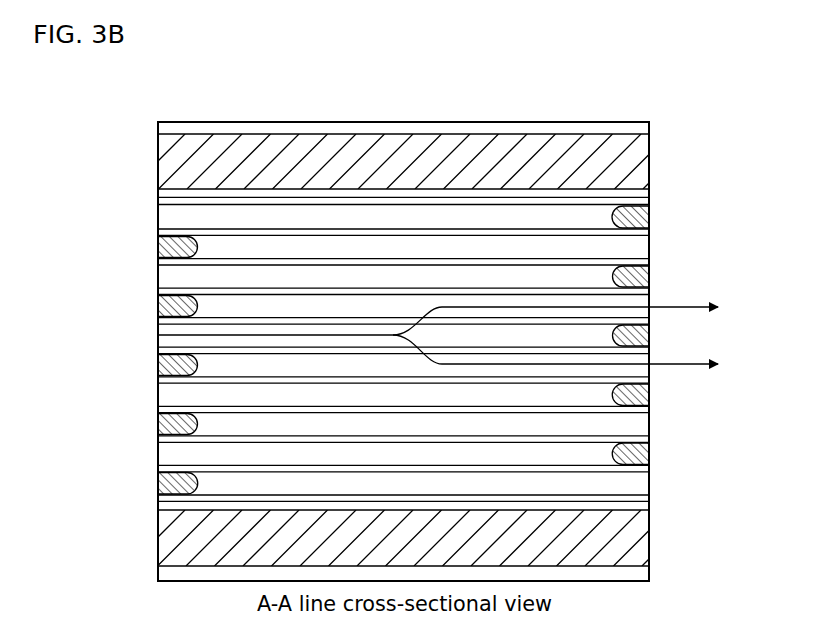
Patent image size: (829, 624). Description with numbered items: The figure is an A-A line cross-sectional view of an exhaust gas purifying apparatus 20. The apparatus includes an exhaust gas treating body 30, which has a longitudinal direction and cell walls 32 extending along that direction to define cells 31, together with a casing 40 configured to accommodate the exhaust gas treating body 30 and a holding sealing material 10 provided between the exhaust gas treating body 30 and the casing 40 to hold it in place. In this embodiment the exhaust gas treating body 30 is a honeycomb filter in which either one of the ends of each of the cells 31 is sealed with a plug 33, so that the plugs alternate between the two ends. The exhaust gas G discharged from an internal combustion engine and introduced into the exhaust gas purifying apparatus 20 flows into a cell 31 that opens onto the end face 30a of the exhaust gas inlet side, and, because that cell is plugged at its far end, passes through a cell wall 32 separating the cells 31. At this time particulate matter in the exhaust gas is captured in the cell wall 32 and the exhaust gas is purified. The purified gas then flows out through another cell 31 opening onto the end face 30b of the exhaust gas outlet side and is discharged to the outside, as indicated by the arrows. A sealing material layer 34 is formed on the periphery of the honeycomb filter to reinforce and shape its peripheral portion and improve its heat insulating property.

The holding sealing material 10 is at (473, 157).
The exhaust gas purifying apparatus 20 is at (561, 105).
The exhaust gas treating body 30 is at (128, 289).
The end face of the exhaust gas inlet side 30a is at (158, 218).
The end face of the exhaust gas outlet side 30b is at (649, 292).
The cell 31 is at (196, 222).
The cell wall 32 is at (358, 228).
The plug 33 is at (632, 213).
The sealing material layer 34 is at (413, 193).
The casing 40 is at (268, 128).
The exhaust gas G is at (158, 335).